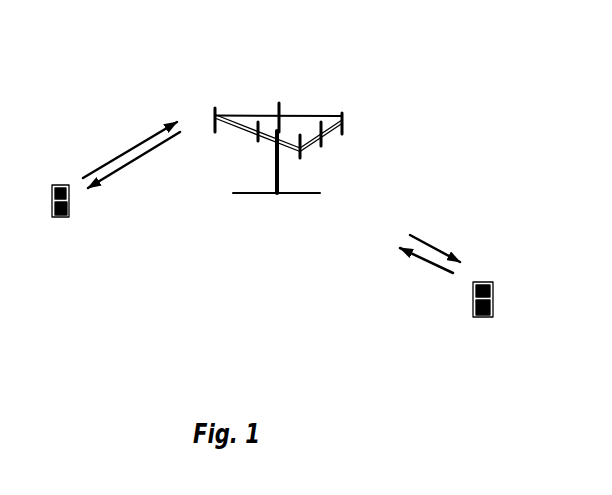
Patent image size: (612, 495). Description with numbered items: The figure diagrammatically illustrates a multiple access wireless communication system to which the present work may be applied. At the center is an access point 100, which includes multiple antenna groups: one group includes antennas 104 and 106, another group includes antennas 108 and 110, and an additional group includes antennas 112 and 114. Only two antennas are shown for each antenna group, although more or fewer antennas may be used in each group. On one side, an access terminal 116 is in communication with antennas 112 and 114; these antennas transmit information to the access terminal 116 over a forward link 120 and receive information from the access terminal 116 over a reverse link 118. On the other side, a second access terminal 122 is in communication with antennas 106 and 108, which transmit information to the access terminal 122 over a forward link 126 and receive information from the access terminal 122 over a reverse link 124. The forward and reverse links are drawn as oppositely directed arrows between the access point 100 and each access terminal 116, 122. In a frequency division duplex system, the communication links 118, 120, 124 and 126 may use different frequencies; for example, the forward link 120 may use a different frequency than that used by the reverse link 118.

The access point 100 is at (264, 194).
The antenna 104 is at (300, 158).
The antenna 106 is at (321, 146).
The antenna 108 is at (341, 132).
The antenna 110 is at (282, 110).
The antenna 112 is at (216, 113).
The antenna 114 is at (258, 147).
The access terminal 116 is at (60, 185).
The reverse link 118 is at (130, 145).
The forward link 120 is at (142, 157).
The access terminal 122 is at (482, 282).
The reverse link 124 is at (422, 258).
The forward link 126 is at (437, 247).